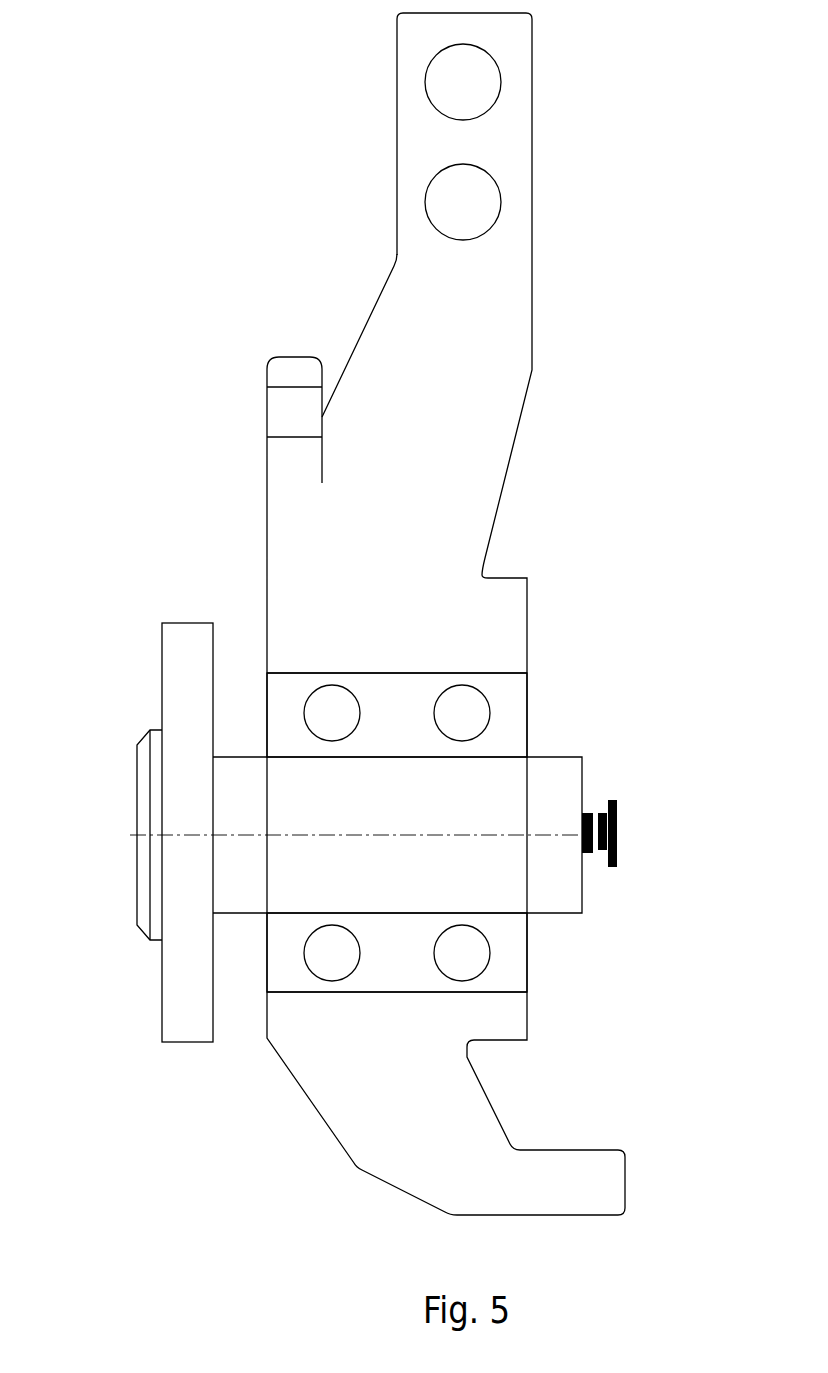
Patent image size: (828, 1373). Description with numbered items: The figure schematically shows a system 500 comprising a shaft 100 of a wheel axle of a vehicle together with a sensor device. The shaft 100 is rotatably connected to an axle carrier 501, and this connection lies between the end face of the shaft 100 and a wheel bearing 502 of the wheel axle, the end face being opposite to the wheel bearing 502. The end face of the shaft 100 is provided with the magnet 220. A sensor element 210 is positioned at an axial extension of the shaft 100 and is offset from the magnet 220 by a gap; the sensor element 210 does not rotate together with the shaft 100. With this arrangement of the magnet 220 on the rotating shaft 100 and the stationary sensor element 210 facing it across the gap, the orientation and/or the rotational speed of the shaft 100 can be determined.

The system 500 is at (119, 147).
The axle carrier 501 is at (526, 577).
The wheel bearing 502 is at (184, 614).
The shaft 100 is at (565, 754).
The sensor element 210 is at (628, 791).
The magnet 220 is at (596, 870).